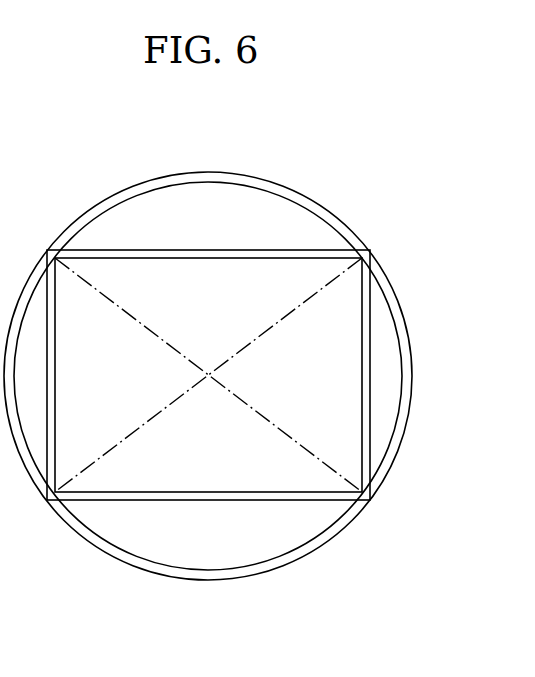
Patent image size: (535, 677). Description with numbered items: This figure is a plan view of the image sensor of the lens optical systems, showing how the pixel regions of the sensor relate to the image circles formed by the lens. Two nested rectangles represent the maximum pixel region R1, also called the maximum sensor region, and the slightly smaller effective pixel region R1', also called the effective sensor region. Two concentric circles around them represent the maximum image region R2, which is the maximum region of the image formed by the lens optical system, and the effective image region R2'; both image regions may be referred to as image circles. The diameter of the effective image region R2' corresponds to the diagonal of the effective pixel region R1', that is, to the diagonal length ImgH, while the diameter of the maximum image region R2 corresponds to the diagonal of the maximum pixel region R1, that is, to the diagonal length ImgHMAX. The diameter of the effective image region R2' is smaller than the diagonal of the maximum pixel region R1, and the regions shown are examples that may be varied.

The maximum pixel region R1 is at (208, 319).
The effective pixel region R1' is at (208, 310).
The maximum image region R2 is at (208, 411).
The effective image region R2' is at (208, 416).
The diagonal length of the effective pixel region ImgH is at (306, 301).
The diagonal length of the maximum pixel region ImgHMAX is at (300, 446).